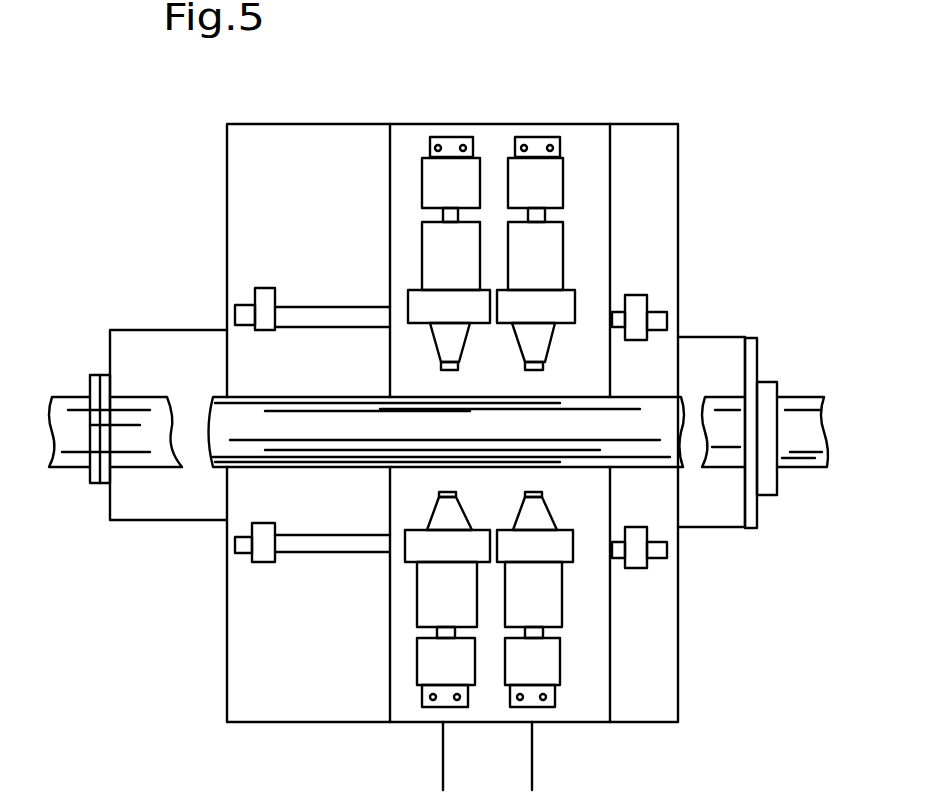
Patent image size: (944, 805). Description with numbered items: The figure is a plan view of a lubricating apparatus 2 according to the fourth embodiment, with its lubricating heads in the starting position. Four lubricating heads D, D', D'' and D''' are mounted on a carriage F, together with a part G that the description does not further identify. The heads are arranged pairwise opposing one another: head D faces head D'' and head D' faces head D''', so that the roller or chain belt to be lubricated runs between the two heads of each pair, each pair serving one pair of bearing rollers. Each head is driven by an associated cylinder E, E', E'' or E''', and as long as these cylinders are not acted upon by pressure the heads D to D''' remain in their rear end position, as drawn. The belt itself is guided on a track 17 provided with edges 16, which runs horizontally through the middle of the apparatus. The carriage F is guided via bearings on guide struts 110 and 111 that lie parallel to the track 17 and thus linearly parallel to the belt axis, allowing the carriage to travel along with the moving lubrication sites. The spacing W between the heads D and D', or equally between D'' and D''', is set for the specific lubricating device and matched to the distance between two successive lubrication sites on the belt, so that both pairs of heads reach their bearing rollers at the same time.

The processing unit 2 is at (578, 230).
The left housing section G is at (247, 138).
The carriage F is at (593, 157).
The track 17 is at (635, 417).
The edges 16 is at (802, 402).
The guide strut 110 is at (287, 313).
The guide strut 111 is at (292, 548).
The cylinder E' is at (481, 184).
The cylinder E is at (563, 188).
The cylinder E'' is at (573, 666).
The cylinder E''' is at (422, 666).
The lubricating head D' is at (423, 299).
The lubricating head D is at (606, 297).
The lubricating head D'' is at (622, 550).
The lubricating head D''' is at (416, 560).
The spacing W is at (532, 782).